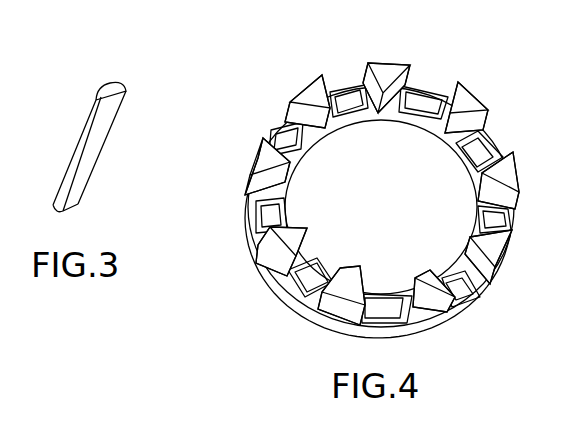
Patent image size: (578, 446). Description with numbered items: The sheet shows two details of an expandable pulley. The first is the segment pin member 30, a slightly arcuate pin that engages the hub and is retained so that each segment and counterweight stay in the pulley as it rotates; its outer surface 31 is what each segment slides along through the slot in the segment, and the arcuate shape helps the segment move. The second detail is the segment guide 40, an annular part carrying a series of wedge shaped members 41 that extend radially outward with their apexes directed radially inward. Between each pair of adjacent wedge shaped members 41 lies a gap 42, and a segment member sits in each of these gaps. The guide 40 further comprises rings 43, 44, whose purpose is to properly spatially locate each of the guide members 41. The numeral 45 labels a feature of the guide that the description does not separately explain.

In FIG. 3, the segment pin member 30 is at (107, 82).
In FIG. 3, the outer surface 31 is at (68, 159).
In FIG. 4, the segment guide 40 is at (386, 63).
In FIG. 4, the wedge shaped member 41 is at (478, 95).
In FIG. 4, the gap 42 is at (250, 217).
In FIG. 4, the ring 43 is at (462, 292).
In FIG. 4, the ring 44 is at (314, 251).
In FIG. 4, the tooth 45 is at (287, 300).